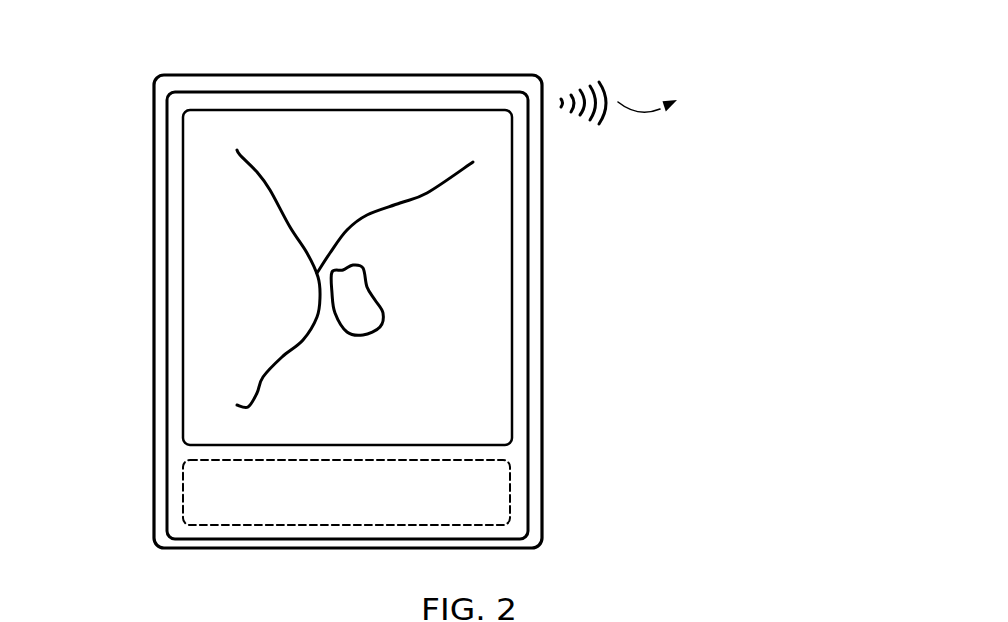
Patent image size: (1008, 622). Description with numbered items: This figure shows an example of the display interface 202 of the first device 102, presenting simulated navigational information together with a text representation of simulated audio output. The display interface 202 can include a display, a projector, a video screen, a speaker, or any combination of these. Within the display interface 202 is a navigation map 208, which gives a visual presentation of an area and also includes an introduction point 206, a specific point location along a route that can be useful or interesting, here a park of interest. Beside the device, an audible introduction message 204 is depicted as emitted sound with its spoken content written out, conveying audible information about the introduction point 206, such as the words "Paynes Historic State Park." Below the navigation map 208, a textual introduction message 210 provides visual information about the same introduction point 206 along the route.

The first device 102 is at (135, 64).
The display interface 202 is at (507, 59).
The audible introduction message 204 is at (620, 131).
The introduction point 206 is at (357, 300).
The navigation map 208 is at (140, 110).
The textual introduction message 210 is at (140, 462).